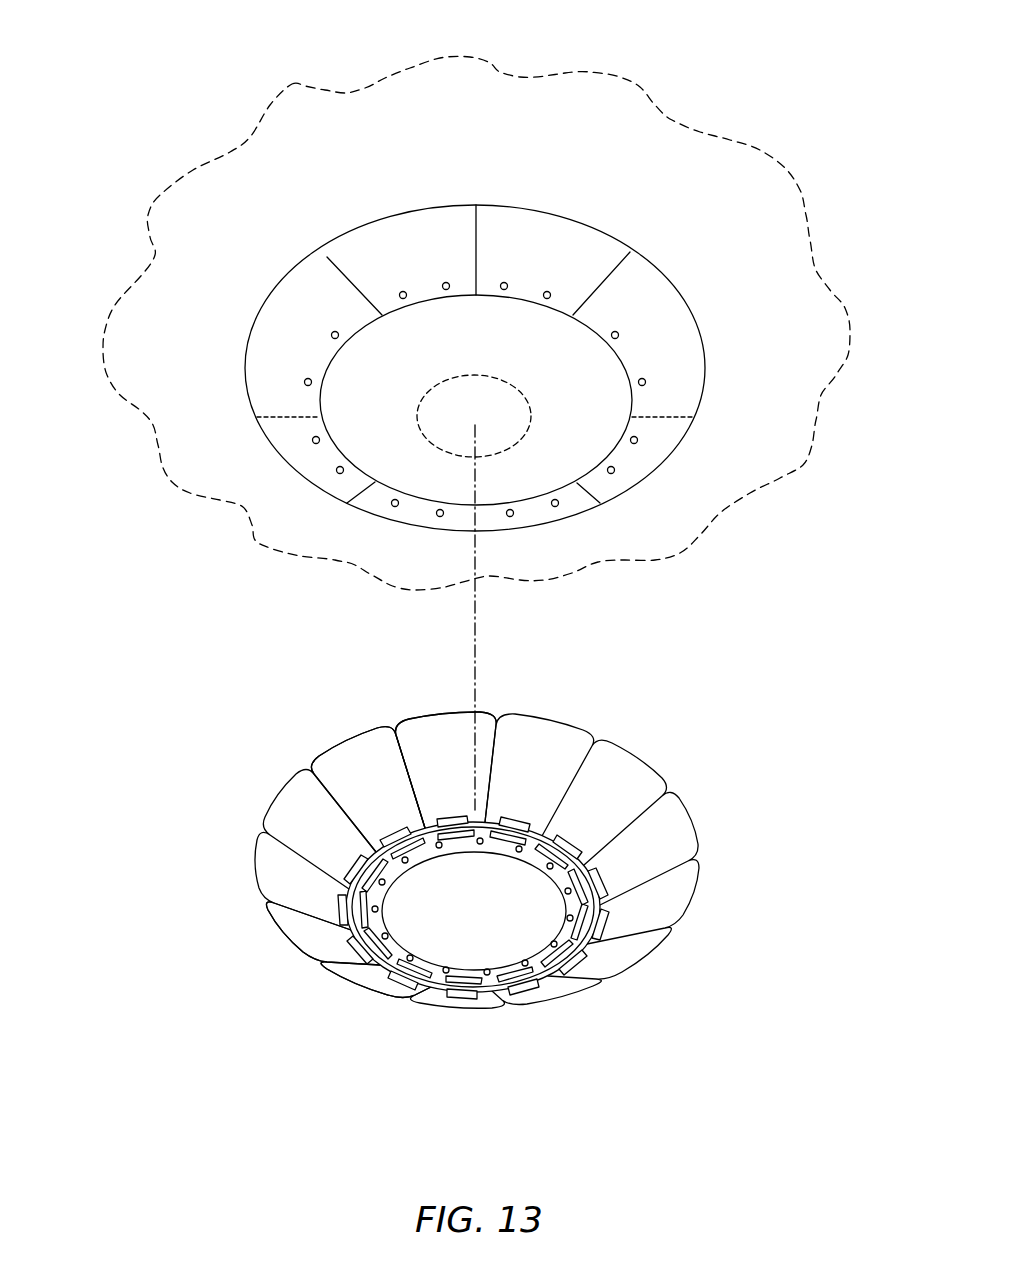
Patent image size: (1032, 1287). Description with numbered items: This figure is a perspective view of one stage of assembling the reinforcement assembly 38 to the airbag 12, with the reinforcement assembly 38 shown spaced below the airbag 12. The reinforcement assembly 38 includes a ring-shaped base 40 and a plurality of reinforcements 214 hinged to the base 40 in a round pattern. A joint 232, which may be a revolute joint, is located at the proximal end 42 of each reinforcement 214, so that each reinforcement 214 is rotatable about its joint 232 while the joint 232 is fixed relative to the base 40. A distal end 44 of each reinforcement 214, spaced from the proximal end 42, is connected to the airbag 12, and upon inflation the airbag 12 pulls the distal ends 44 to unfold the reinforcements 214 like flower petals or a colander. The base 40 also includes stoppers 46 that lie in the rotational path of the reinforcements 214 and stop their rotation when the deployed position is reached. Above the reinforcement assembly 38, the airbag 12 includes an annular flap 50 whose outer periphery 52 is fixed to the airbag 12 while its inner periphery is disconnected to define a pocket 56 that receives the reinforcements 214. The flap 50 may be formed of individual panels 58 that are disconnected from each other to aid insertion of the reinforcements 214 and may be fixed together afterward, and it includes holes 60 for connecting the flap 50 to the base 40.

The airbag 12 is at (290, 82).
The reinforcement assembly 38 is at (583, 1010).
The base 40 is at (460, 990).
The proximal end 42 is at (410, 828).
The distal end 44 is at (324, 362).
The stoppers 46 is at (373, 847).
The flap 50 is at (553, 233).
The outer periphery 52 is at (458, 205).
The pocket 56 is at (352, 460).
The individual panels 58 is at (497, 235).
The holes 60 is at (646, 382).
The reinforcements 214 is at (360, 997).
The joint 232 is at (603, 907).